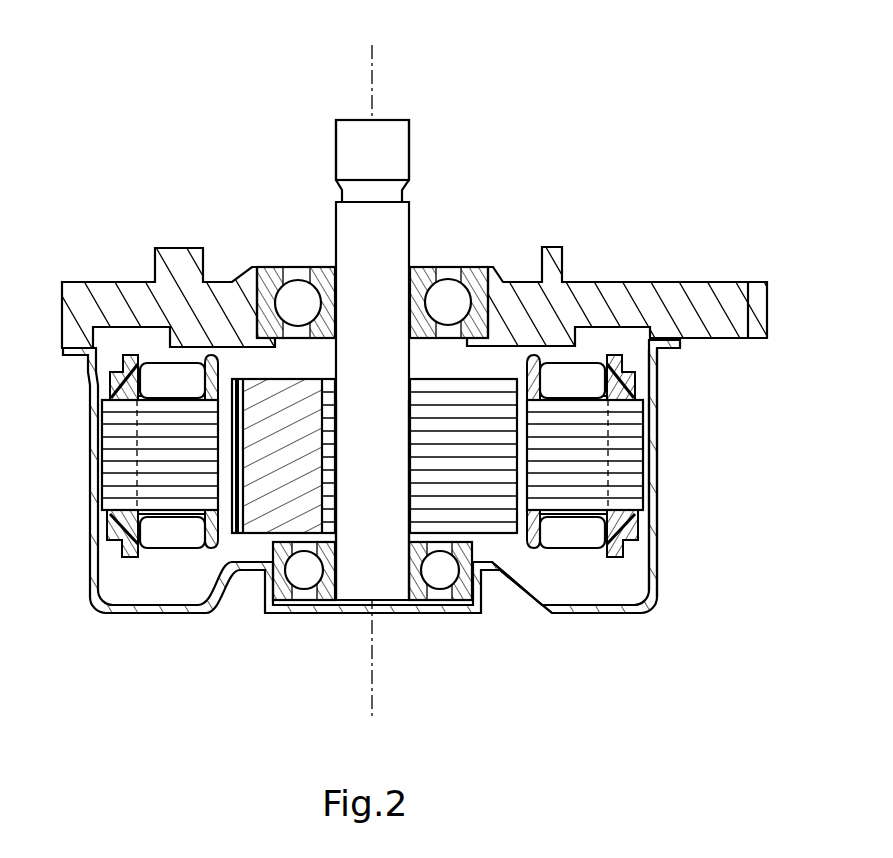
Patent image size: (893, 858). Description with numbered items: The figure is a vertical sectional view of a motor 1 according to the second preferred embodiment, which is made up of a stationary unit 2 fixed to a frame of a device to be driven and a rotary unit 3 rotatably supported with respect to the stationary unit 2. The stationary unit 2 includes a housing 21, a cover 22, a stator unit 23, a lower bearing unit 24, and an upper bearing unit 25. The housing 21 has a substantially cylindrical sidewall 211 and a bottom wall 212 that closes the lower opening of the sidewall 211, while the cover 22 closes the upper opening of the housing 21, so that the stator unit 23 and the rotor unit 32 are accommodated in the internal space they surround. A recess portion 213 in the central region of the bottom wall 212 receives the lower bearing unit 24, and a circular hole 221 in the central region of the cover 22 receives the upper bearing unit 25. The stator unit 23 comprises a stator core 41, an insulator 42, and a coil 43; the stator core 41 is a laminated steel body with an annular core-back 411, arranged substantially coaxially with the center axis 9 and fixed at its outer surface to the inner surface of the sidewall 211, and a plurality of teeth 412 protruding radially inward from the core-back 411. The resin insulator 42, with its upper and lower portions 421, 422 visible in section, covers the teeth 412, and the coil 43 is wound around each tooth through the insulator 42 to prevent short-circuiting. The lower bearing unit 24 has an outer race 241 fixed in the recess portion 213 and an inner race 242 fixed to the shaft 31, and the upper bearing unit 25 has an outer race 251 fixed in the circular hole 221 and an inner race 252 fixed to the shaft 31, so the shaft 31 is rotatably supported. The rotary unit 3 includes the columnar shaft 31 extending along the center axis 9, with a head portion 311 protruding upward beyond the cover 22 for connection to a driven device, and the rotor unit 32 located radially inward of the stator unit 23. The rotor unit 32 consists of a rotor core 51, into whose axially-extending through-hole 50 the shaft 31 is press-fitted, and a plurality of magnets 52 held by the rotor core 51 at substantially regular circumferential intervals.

The motor 1 is at (163, 140).
The stationary unit 2 is at (77, 489).
The rotary unit 3 is at (488, 360).
The center axis 9 is at (372, 68).
The housing 21 is at (680, 693).
The sidewall 211 is at (653, 605).
The bottom wall 212 is at (583, 610).
The recess portion 213 is at (484, 605).
The cover 22 is at (620, 302).
The circular hole 221 is at (478, 293).
The stator unit 23 is at (253, 705).
The lower bearing unit 24 is at (365, 665).
The outer race 241 is at (284, 590).
The inner race 242 is at (328, 590).
The upper bearing unit 25 is at (328, 203).
The outer race 251 is at (270, 283).
The inner race 252 is at (321, 278).
The shaft 31 is at (420, 212).
The head portion 311 is at (397, 150).
The rotor unit 32 is at (715, 425).
The stator core 41 is at (168, 663).
The core-back 411 is at (120, 485).
The teeth 412 is at (168, 485).
The insulator 42 is at (223, 530).
The upper insulator 421 is at (614, 387).
The lower insulator 422 is at (603, 530).
The coil 43 is at (184, 536).
The through-hole 50 is at (390, 512).
The rotor core 51 is at (485, 438).
The magnets 52 is at (283, 473).